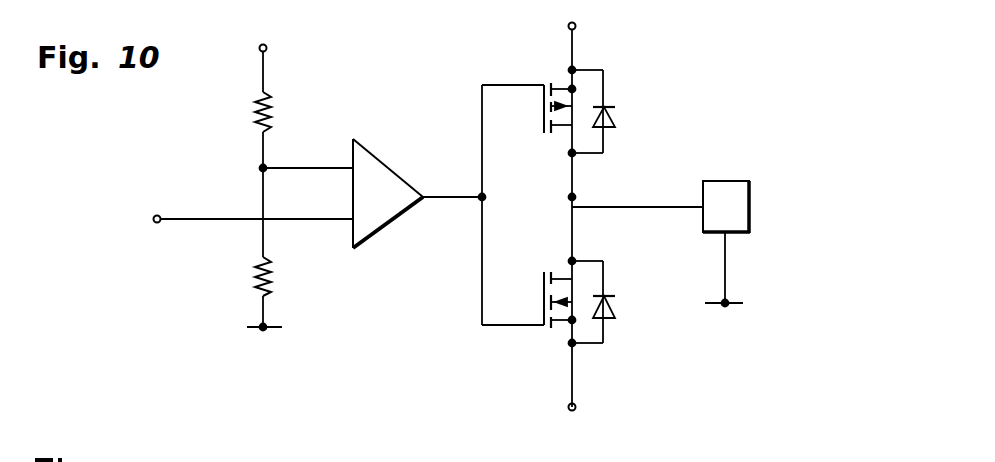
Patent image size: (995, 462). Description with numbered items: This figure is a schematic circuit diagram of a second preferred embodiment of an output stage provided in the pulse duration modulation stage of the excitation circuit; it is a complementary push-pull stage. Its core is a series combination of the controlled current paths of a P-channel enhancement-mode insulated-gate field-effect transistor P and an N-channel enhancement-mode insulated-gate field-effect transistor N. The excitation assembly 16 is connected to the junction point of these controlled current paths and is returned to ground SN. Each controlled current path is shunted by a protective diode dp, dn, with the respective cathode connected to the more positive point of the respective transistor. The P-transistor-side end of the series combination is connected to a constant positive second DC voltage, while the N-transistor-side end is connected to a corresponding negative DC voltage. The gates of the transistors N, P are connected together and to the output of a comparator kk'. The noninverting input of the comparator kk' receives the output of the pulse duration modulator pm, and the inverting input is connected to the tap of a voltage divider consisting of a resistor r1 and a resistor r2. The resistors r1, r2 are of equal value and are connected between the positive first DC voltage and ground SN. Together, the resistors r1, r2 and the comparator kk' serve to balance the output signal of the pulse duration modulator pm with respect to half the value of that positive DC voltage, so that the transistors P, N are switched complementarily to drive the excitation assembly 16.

The resistor r1 is at (258, 111).
The resistor r2 is at (258, 275).
The pulse duration modulator pm is at (229, 220).
The comparator kk' is at (394, 176).
The P-channel enhancement-mode insulated-gate field-effect transistor P is at (545, 126).
The N-channel enhancement-mode insulated-gate field-effect transistor N is at (543, 280).
The protective diode dp is at (615, 106).
The protective diode dn is at (616, 300).
The excitation assembly 16 is at (734, 197).
The ground SN is at (515, 317).